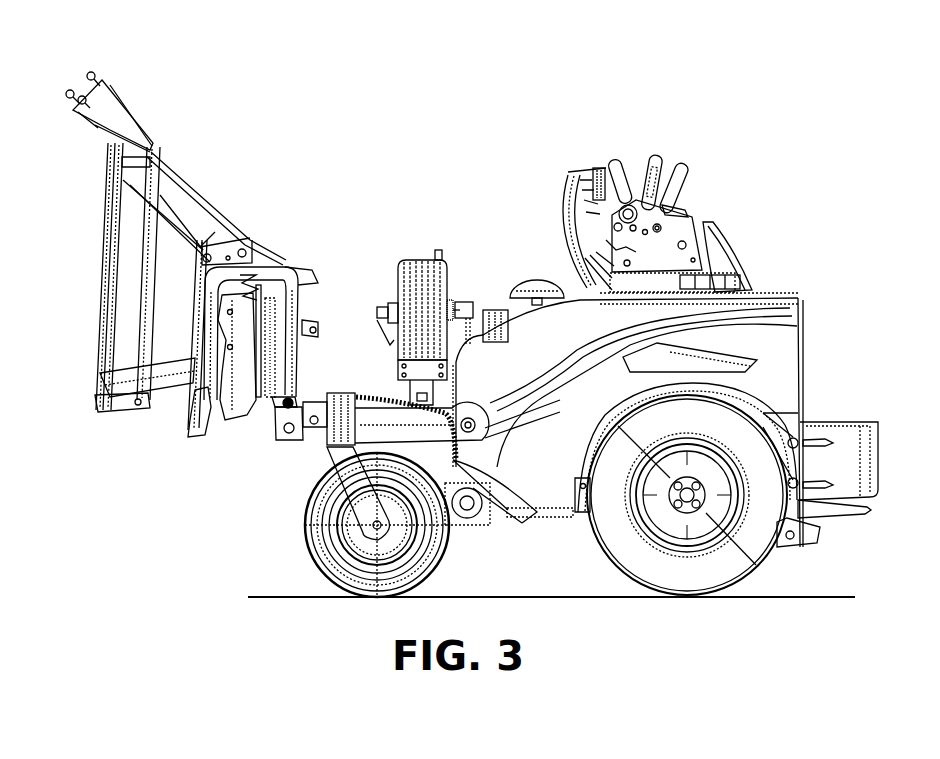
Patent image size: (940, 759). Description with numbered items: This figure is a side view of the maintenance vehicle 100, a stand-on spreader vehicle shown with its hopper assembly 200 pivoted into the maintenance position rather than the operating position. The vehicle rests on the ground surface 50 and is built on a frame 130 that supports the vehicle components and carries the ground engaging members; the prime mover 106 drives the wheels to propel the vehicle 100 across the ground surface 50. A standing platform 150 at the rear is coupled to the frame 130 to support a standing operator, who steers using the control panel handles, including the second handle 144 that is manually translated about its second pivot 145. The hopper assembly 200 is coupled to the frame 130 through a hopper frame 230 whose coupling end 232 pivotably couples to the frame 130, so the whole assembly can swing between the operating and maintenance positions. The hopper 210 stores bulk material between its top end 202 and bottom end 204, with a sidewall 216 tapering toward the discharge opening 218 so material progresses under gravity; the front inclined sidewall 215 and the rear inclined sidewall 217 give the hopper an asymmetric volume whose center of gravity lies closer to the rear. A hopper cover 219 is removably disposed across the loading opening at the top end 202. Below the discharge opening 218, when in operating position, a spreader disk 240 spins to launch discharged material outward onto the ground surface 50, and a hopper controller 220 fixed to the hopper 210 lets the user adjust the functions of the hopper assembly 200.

The ground surface 50 is at (302, 597).
The maintenance vehicle 100 is at (452, 140).
The prime mover 106 is at (498, 245).
The frame 130 is at (368, 425).
The second handle 144 is at (655, 177).
The second pivot 145 is at (645, 232).
The standing platform 150 is at (827, 517).
The hopper assembly 200 is at (186, 128).
The top end 202 is at (58, 283).
The bottom end 204 is at (255, 233).
The hopper 210 is at (175, 215).
The front inclined sidewall 215 is at (148, 397).
The sidewall 216 is at (122, 360).
The rear inclined sidewall 217 is at (213, 233).
The discharge opening 218 is at (263, 337).
The hopper cover 219 is at (107, 245).
The hopper controller 220 is at (92, 100).
The hopper frame 230 is at (297, 283).
The coupling end 232 is at (290, 400).
The spreader disk 240 is at (272, 368).